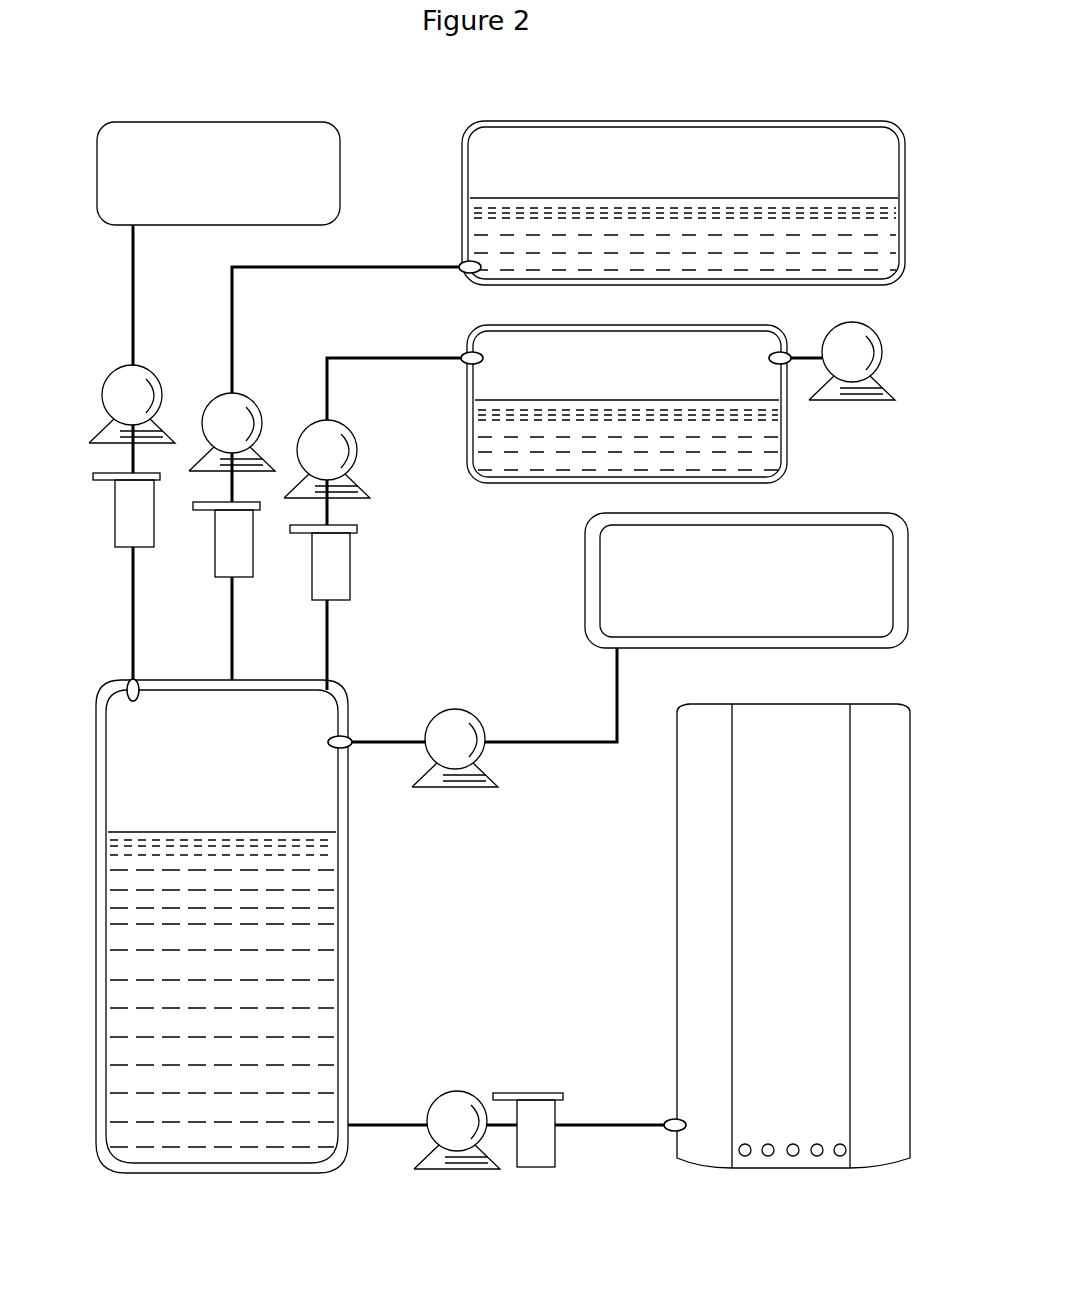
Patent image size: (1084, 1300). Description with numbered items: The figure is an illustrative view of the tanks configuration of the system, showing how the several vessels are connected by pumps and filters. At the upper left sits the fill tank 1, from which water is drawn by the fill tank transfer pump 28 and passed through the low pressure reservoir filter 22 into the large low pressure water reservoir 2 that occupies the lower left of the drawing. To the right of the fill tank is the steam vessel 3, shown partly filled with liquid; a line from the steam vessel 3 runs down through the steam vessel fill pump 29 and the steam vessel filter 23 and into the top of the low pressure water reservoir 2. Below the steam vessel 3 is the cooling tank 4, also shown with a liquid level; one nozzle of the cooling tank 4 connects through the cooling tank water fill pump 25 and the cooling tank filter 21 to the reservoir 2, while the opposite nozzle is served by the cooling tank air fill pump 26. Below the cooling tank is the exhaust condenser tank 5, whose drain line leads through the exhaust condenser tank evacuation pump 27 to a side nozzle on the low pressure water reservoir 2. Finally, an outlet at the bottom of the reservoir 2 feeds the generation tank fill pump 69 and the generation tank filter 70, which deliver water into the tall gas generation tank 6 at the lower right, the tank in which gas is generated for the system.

The fill tank 1 is at (343, 152).
The low pressure water reservoir 2 is at (351, 868).
The steam vessel 3 is at (459, 152).
The cooling tank 4 is at (468, 345).
The exhaust condenser tank 5 is at (578, 572).
The gas generation tank 6 is at (671, 882).
The cooling tank filter 21 is at (350, 603).
The low pressure reservoir filter 22 is at (152, 550).
The steam vessel filter 23 is at (252, 580).
The cooling tank water fill pump 25 is at (352, 428).
The cooling tank air fill pump 26 is at (880, 352).
The exhaust condenser tank evacuation pump 27 is at (484, 728).
The fill tank transfer pump 28 is at (158, 384).
The steam vessel fill pump 29 is at (254, 400).
The generation tank fill pump 69 is at (475, 1094).
The generation tank filter 70 is at (563, 1093).